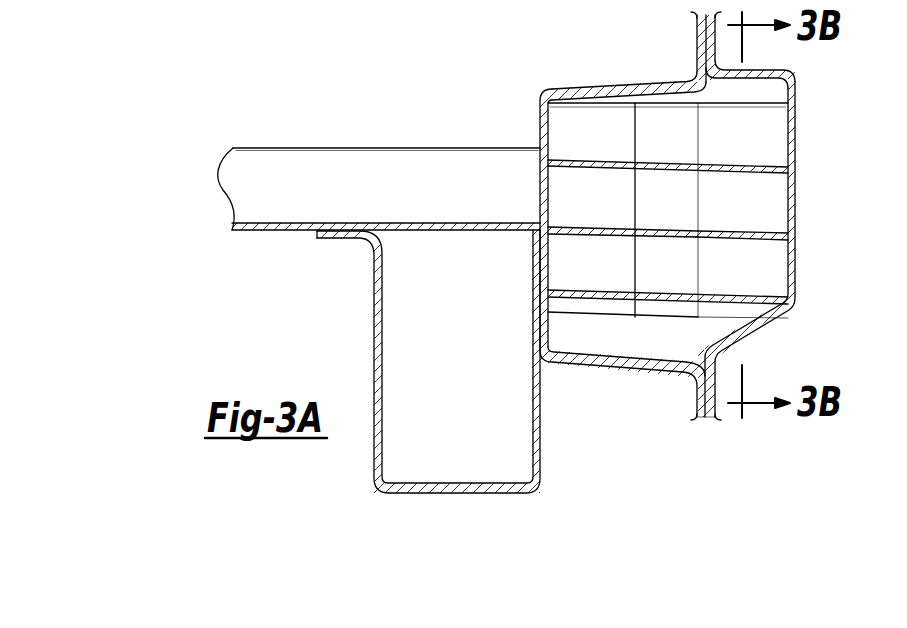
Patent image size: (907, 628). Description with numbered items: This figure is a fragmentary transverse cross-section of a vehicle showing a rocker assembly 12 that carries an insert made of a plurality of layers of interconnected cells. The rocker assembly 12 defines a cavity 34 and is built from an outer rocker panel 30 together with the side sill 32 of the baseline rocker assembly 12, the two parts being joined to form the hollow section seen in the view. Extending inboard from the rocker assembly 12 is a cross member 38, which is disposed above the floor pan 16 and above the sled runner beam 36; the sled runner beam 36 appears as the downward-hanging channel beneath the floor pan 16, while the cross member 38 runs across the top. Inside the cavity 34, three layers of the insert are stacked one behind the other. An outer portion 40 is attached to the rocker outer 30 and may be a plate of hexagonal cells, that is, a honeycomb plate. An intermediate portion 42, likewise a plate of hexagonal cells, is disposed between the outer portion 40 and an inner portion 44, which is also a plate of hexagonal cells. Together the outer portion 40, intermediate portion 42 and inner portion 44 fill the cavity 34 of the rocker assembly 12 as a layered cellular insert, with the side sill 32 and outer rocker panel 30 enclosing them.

The rocker assembly 12 is at (806, 126).
The floor pan 16 is at (267, 229).
The outer rocker panel 30 is at (790, 88).
The side sill 32 is at (627, 84).
The cavity 34 is at (703, 97).
The sled runner beam 36 is at (377, 357).
The cross member 38 is at (255, 163).
The outer portion 40 is at (752, 232).
The intermediate portion 42 is at (680, 163).
The inner portion 44 is at (602, 228).